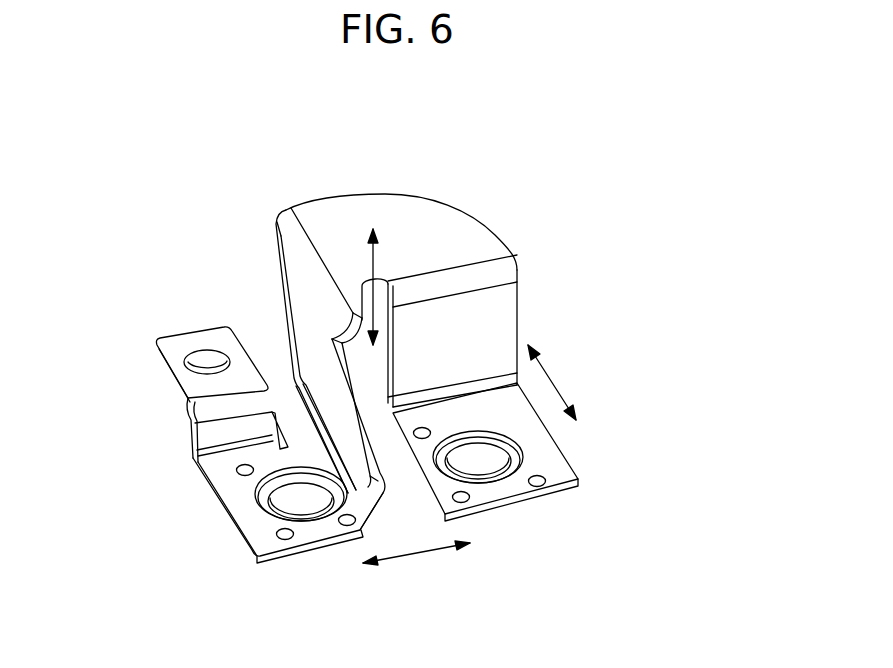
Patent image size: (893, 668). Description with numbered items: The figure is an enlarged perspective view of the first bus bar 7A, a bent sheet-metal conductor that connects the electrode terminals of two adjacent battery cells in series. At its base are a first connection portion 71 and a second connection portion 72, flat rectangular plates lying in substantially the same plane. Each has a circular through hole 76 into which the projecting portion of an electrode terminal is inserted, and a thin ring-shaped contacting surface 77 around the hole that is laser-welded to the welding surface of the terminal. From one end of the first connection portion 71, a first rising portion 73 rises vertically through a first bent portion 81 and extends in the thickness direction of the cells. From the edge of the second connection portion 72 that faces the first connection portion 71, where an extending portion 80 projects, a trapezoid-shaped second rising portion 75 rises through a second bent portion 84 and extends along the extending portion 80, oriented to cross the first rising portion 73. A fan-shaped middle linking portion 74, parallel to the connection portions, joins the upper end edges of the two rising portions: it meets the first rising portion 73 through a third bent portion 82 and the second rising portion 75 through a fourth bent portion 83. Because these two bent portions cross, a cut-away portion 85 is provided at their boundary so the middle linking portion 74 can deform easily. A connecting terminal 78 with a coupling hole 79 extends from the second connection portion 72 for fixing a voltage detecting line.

The first bus bar 7A is at (603, 165).
The first connection portion 71 is at (535, 445).
The second connection portion 72 is at (227, 487).
The first rising portion 73 is at (490, 320).
The middle linking portion 74 is at (352, 220).
The second rising portion 75 is at (300, 317).
The through hole 76 is at (312, 512).
The contacting surface 77 is at (260, 499).
The connecting terminal 78 is at (190, 387).
The coupling hole 79 is at (207, 358).
The extending portion 80 is at (285, 428).
The first bent portion 81 is at (470, 390).
The third bent portion 82 is at (462, 273).
The fourth bent portion 83 is at (283, 247).
The second bent portion 84 is at (306, 410).
The cut-away portion 85 is at (380, 282).